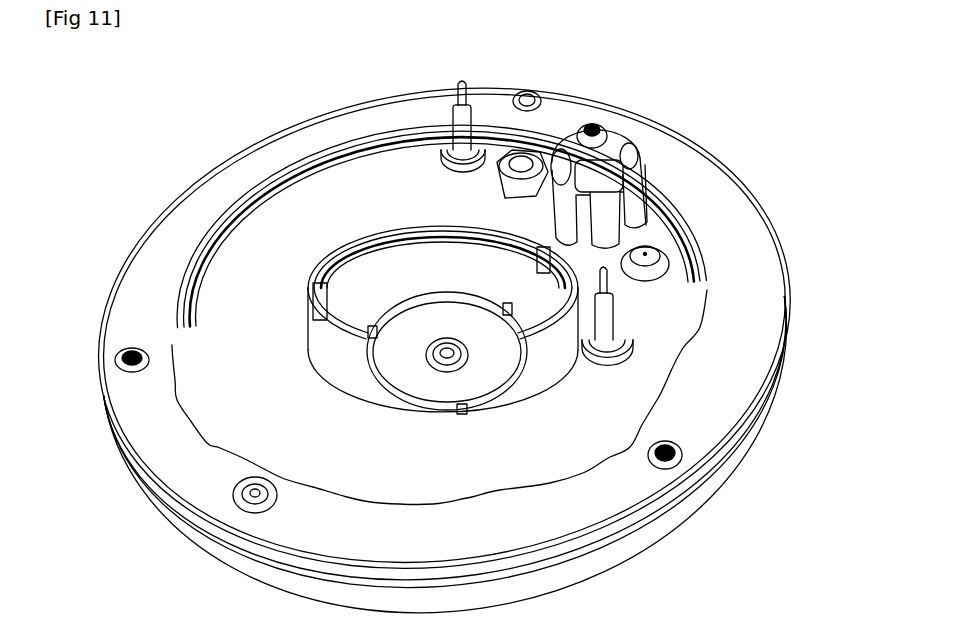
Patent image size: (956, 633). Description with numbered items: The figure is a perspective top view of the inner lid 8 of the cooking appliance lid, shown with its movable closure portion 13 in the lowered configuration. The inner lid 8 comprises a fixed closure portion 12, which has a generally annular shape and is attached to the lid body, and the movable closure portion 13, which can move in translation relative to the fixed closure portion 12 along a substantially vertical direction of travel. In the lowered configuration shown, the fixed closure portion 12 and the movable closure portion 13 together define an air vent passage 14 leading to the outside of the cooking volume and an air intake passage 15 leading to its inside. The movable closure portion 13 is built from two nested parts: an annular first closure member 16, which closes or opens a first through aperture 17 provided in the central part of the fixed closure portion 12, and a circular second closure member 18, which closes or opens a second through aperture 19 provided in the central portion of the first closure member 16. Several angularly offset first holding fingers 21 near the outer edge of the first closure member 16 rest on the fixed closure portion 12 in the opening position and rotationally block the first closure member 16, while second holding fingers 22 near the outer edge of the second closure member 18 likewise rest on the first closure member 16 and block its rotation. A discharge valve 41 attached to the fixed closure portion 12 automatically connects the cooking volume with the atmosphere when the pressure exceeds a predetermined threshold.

The inner lid 8 is at (258, 267).
The fixed closure portion 12 is at (670, 363).
The movable closure portion 13 is at (403, 267).
The air vent passage 14 is at (437, 290).
The air intake passage 15 is at (485, 235).
The first closure member 16 is at (333, 353).
The first through aperture 17 is at (342, 267).
The second closure member 18 is at (483, 377).
The second through aperture 19 is at (458, 288).
The first holding fingers 21 is at (320, 287).
The second holding fingers 22 is at (507, 307).
The discharge valve 41 is at (610, 143).